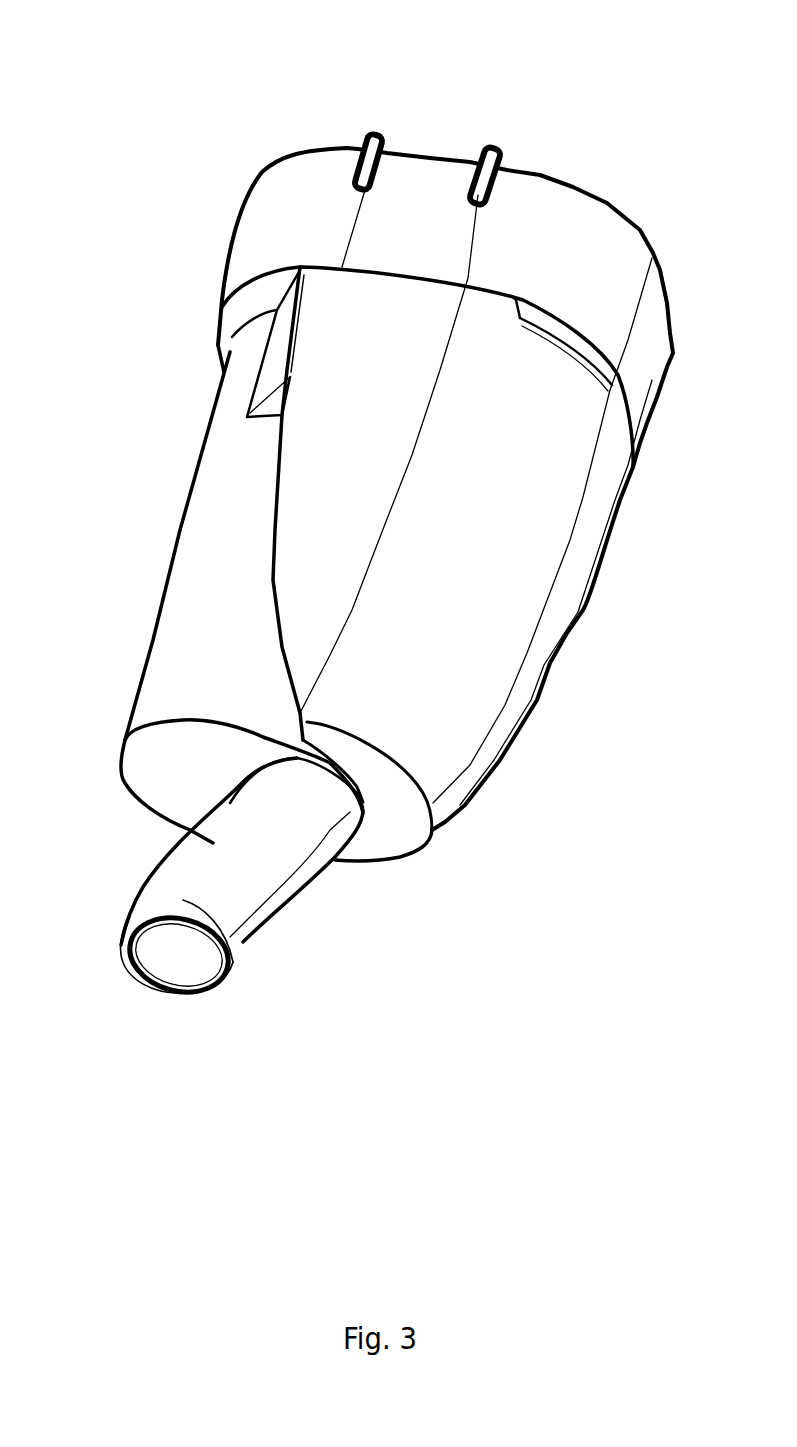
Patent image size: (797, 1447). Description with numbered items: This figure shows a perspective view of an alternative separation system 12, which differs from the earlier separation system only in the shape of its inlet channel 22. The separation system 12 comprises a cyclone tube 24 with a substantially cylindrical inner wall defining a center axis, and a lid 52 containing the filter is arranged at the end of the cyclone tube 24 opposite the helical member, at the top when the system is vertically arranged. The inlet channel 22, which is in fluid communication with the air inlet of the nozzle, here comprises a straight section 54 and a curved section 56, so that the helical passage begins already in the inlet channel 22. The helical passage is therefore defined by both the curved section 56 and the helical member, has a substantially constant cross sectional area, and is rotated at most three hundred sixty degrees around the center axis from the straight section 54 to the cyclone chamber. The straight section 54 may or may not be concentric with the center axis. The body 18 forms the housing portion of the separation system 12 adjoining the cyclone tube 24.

The separation system 12 is at (113, 67).
The main body housing 18 is at (482, 552).
The inlet channel 22 is at (217, 843).
The cyclone tube 24 is at (215, 516).
The lid 52 is at (297, 206).
The straight section 54 is at (233, 962).
The curved section 56 is at (263, 840).